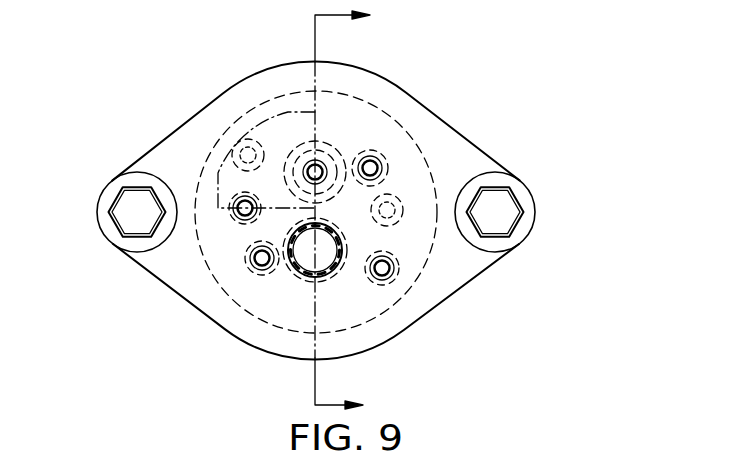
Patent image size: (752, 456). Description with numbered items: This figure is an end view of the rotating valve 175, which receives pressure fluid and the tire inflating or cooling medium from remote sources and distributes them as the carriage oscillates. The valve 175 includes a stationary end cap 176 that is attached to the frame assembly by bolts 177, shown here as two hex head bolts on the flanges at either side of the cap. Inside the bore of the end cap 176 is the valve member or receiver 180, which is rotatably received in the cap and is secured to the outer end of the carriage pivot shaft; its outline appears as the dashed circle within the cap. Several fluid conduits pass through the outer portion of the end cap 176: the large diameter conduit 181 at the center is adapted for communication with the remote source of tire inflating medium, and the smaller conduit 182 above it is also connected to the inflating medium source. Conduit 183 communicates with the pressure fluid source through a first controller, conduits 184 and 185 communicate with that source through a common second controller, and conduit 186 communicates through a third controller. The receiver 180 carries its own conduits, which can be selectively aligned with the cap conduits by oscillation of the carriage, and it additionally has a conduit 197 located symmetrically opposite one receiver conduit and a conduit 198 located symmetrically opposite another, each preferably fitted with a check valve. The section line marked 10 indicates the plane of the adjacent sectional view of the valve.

The section line 10- 10 is at (309, 208).
The rotating valve 175 is at (442, 118).
The stationary end cap 176 is at (457, 288).
The bolts 177 is at (513, 209).
The valve member or receiver 180 is at (370, 100).
The conduit 181 is at (320, 278).
The conduit 182 is at (318, 162).
The conduit 183 is at (236, 217).
The conduit 184 is at (258, 271).
The conduit 185 is at (383, 168).
The conduit 186 is at (394, 270).
The conduit 197 is at (403, 213).
The conduit 198 is at (252, 157).